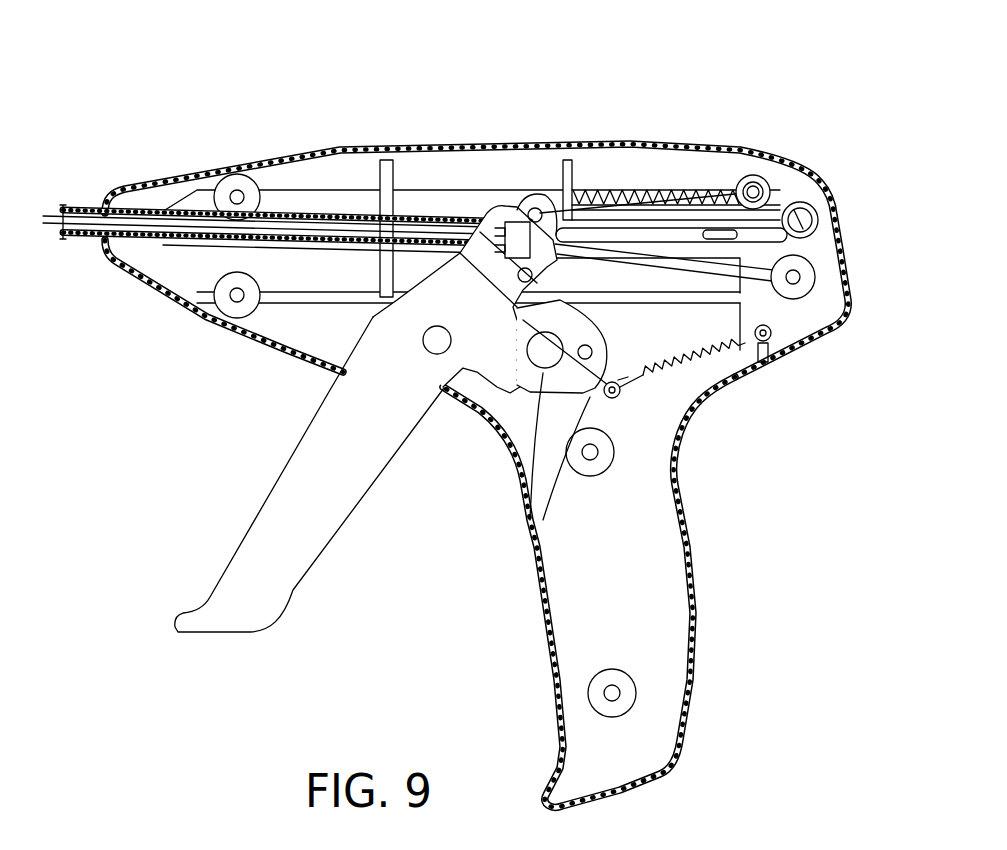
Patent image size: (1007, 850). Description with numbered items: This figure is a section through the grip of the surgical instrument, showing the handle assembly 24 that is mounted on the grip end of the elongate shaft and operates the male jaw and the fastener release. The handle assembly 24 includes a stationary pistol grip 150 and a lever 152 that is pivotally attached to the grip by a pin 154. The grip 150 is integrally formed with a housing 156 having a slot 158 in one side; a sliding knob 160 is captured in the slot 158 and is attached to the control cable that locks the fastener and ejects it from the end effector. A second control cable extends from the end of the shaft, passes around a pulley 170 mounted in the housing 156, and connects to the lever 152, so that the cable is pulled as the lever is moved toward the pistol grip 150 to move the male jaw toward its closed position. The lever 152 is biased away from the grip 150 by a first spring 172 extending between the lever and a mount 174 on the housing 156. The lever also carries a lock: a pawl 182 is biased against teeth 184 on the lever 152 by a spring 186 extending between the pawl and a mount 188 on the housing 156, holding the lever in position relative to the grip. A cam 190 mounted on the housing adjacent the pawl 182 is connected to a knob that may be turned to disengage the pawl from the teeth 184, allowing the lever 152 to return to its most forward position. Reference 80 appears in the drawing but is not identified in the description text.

The handle assembly 24 is at (538, 110).
The direction of trigger movement 80 is at (633, 412).
The stationary pistol grip 150 is at (693, 580).
The lever 152 is at (293, 590).
The pin 154 is at (423, 342).
The housing 156 is at (747, 150).
The slot 158 is at (787, 208).
The sliding knob 160 is at (703, 232).
The pulley 170 is at (847, 303).
The first spring 172 is at (637, 188).
The mount 174 is at (770, 195).
The pawl 182 is at (537, 517).
The teeth 184 is at (517, 387).
The spring 186 is at (720, 355).
The mount 188 is at (777, 343).
The cam 190 is at (517, 473).